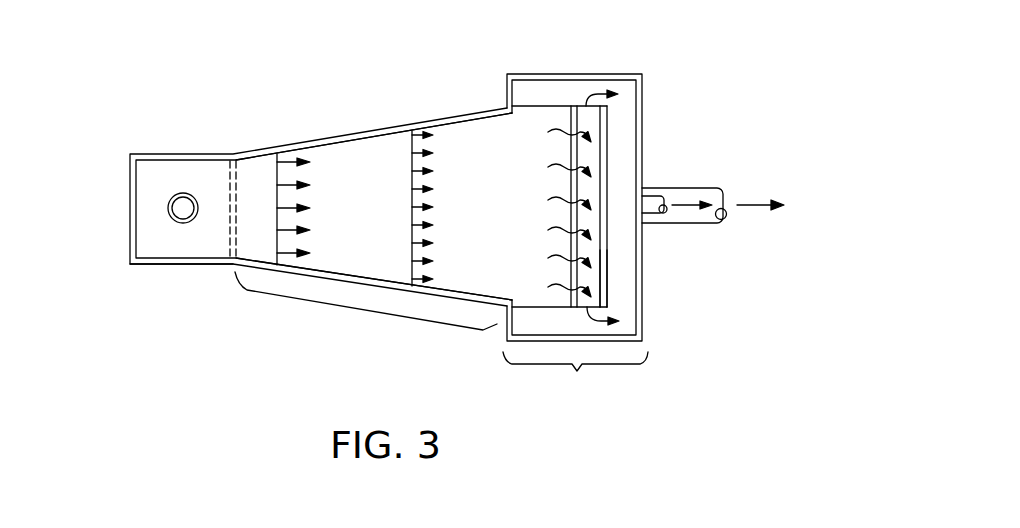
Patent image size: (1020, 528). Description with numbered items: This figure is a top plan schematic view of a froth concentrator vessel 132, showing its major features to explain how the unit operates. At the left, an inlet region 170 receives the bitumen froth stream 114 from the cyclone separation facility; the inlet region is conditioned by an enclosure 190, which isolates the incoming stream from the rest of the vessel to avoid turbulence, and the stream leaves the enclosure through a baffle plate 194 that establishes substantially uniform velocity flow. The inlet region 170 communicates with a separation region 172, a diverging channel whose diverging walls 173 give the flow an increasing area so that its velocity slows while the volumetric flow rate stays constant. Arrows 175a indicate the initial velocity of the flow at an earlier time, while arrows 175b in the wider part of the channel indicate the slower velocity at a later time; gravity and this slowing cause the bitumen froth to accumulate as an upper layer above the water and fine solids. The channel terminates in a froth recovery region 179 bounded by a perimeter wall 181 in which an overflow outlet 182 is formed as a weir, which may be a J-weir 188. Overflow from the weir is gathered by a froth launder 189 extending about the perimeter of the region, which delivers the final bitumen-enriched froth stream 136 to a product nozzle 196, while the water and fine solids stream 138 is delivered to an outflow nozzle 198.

The bitumen froth stream 114 is at (160, 210).
The concentrator vessel 132 is at (349, 110).
The final bitumen froth stream 136 is at (687, 190).
The water and fine solids stream 138 is at (755, 190).
The inlet region 170 is at (159, 153).
The separation region 172 is at (366, 314).
The diverging walls 173 is at (352, 143).
The arrows showing initial velocity of flow 175a is at (278, 173).
The arrows showing slower flow velocity 175b is at (410, 160).
The froth recovery region 179 is at (575, 380).
The perimeter wall 181 is at (600, 122).
The overflow outlet 182 is at (605, 289).
The J-weir 188 is at (583, 143).
The froth launder 189 is at (551, 96).
The enclosure 190 is at (183, 267).
The baffle plate 194 is at (224, 192).
The product nozzle 196 is at (658, 217).
The outflow nozzle 198 is at (700, 218).